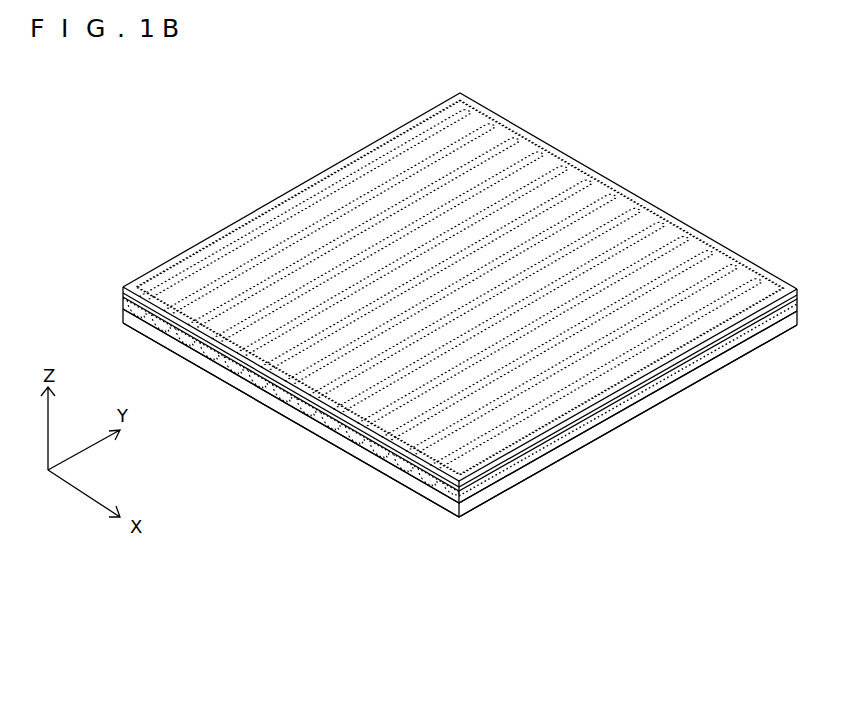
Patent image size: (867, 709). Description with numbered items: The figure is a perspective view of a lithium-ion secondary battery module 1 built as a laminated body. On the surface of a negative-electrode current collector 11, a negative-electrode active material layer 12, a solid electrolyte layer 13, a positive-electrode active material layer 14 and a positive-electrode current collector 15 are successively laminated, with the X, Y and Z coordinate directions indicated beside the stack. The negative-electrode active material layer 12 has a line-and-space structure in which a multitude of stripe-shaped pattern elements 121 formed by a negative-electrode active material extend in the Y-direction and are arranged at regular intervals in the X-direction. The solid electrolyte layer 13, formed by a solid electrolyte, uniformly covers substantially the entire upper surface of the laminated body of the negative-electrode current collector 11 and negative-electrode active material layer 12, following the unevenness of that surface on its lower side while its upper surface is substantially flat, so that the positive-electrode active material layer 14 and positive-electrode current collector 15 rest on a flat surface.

The lithium-ion secondary battery module 1 is at (581, 506).
The negative-electrode current collector 11 is at (723, 362).
The negative-electrode active material layer 12 is at (664, 120).
The stripe-shaped pattern elements 121 is at (503, 150).
The solid electrolyte layer 13 is at (121, 298).
The positive-electrode active material layer 14 is at (637, 390).
The positive-electrode current collector 15 is at (340, 160).